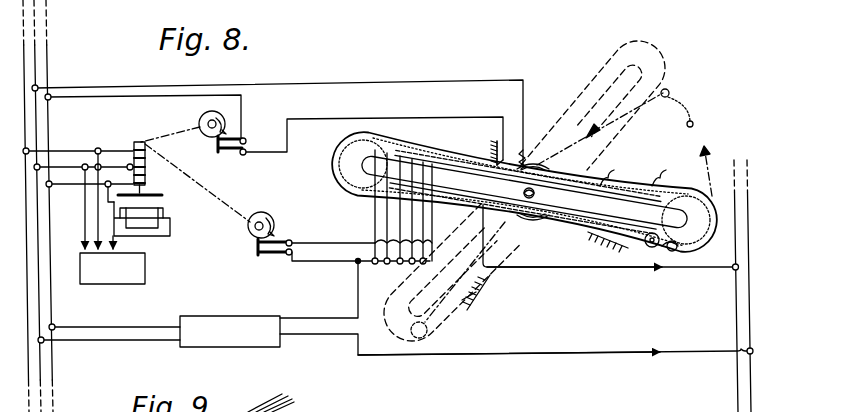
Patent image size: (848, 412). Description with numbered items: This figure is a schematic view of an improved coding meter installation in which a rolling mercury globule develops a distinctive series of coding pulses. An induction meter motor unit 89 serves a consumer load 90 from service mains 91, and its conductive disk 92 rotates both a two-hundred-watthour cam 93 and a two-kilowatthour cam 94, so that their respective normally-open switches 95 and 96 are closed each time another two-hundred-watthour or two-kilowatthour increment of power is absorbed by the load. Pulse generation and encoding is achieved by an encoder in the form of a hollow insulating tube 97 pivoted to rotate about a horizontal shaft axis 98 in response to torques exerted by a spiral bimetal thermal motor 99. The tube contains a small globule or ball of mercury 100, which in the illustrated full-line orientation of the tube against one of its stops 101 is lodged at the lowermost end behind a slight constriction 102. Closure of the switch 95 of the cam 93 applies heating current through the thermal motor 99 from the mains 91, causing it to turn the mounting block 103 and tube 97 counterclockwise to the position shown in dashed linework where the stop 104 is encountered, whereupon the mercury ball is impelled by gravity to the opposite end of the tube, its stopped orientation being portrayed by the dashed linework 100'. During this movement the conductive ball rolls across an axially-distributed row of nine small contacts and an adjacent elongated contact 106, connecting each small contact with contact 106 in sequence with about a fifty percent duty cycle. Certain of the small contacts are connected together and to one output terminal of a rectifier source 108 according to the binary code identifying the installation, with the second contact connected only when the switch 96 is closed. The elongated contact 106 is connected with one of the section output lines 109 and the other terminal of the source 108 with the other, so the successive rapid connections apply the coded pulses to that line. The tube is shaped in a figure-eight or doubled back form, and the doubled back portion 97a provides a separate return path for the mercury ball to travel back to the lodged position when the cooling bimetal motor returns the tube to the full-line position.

The induction meter motor unit 89 is at (135, 141).
The consumer load 90 is at (146, 272).
The service mains 91 is at (40, 72).
The conductive disk 92 is at (150, 202).
The 200 watthour cam 93 is at (198, 118).
The 2 kwh. cam 94 is at (248, 235).
The normally-open switch 95 is at (236, 155).
The normally-open switch 96 is at (270, 258).
The hollow insulating tube 97 is at (458, 164).
The doubled back portion 97a is at (352, 206).
The horizontal shaft axis 98 is at (531, 224).
The bimetal thermal motor 99 is at (535, 154).
The globule or ball of mercury 100 is at (683, 275).
The mercury ball in stopped orientation 100' is at (466, 328).
The stop 101 is at (602, 242).
The slight constriction 102 is at (650, 248).
The mounting block 103 is at (494, 276).
The stop 104 is at (482, 299).
The elongated contact 106 is at (398, 138).
The rectifier source 108 is at (190, 315).
The section output lines 109 is at (746, 292).